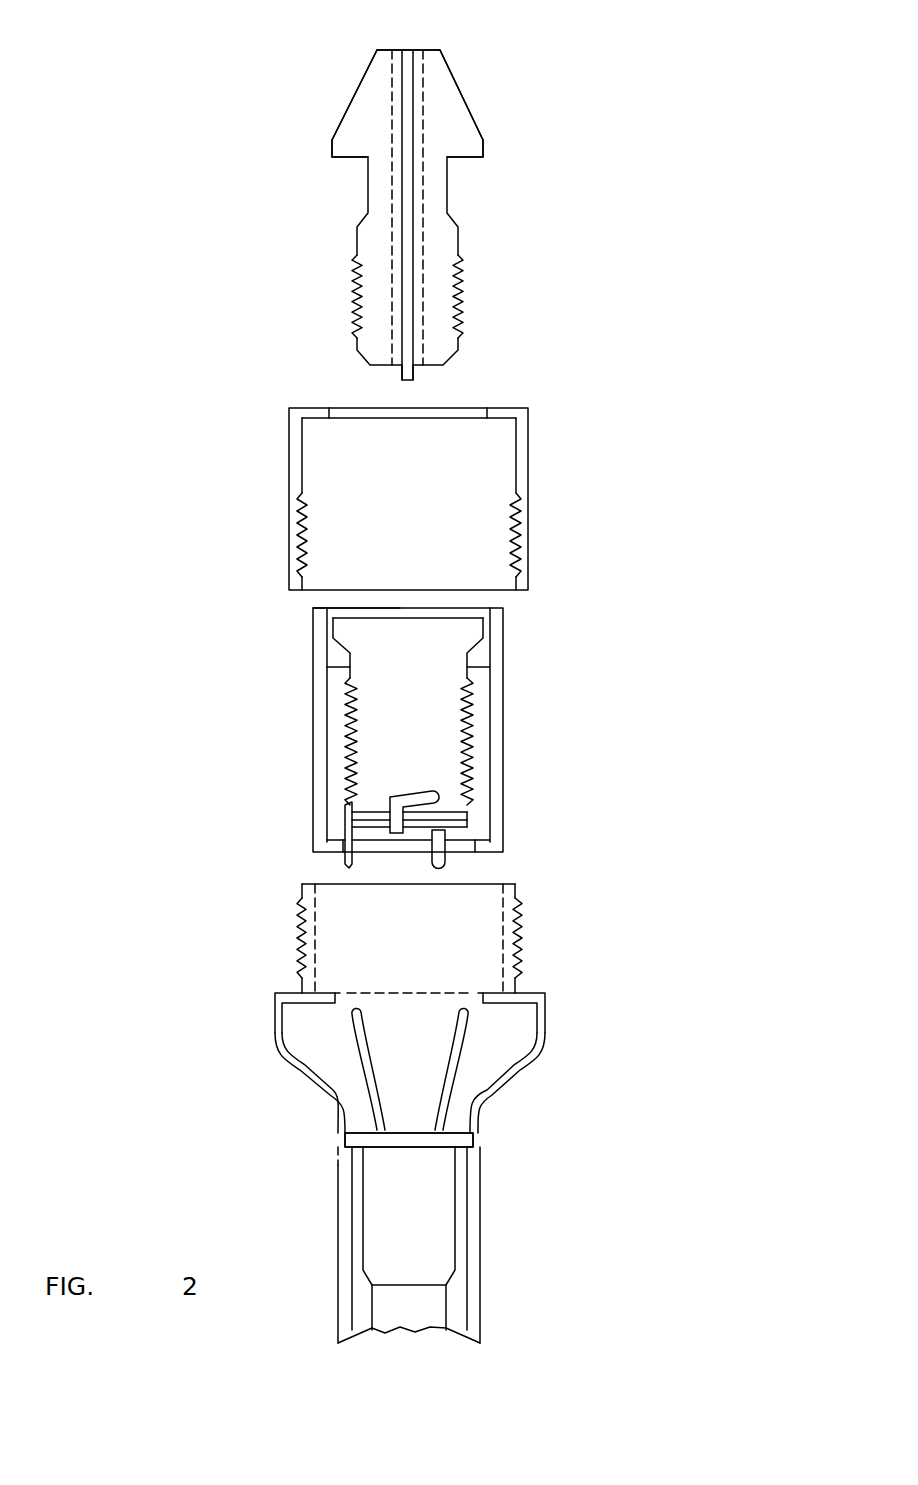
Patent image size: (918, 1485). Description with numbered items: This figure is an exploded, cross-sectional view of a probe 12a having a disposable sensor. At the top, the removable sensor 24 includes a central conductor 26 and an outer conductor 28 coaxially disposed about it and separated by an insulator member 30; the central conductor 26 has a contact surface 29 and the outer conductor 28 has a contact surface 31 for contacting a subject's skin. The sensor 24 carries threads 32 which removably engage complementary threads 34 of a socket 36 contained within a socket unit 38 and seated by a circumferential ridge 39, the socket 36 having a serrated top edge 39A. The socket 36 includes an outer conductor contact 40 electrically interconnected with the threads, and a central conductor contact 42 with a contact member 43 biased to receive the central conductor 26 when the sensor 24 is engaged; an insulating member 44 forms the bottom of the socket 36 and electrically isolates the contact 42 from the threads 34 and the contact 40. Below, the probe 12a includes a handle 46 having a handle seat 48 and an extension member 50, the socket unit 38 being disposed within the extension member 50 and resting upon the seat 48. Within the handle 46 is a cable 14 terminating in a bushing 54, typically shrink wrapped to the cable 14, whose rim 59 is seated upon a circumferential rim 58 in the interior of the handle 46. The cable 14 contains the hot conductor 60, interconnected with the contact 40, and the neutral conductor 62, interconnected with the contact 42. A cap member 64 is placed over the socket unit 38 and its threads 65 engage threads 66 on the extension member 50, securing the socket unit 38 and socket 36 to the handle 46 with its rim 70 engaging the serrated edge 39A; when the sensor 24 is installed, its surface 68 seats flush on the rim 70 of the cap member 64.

The probe 12a is at (630, 287).
The cable 14 is at (427, 1305).
The removable sensor 24 is at (532, 115).
The central conductor 26 is at (407, 198).
The outer conductor 28 is at (350, 97).
The contact surface 29 is at (410, 50).
The insulator member 30 is at (398, 50).
The contact surface 31 is at (437, 45).
The threads 32 is at (355, 290).
The threads 34 is at (470, 775).
The socket 36 is at (488, 722).
The socket unit 38 is at (483, 652).
The circumferential ridge 39 is at (333, 650).
The serrated top edge 39A is at (315, 608).
The outer conductor contact 40 is at (345, 866).
The central conductor contact 42 is at (442, 858).
The contact member 43 is at (422, 787).
The insulating member 44 is at (460, 835).
The handle 46 is at (598, 1040).
The handle seat 48 is at (533, 993).
The extension member 50 is at (516, 885).
The bushing 54 is at (402, 1205).
The circumferential rim 58 is at (470, 1150).
The rim 59 is at (368, 1136).
The conductor 60 is at (367, 1055).
The neutral conductor 62 is at (445, 1055).
The cap member 64 is at (289, 453).
The threads 65 is at (505, 535).
The threads 66 is at (300, 925).
The surface 68 is at (345, 158).
The rim 70 is at (303, 407).